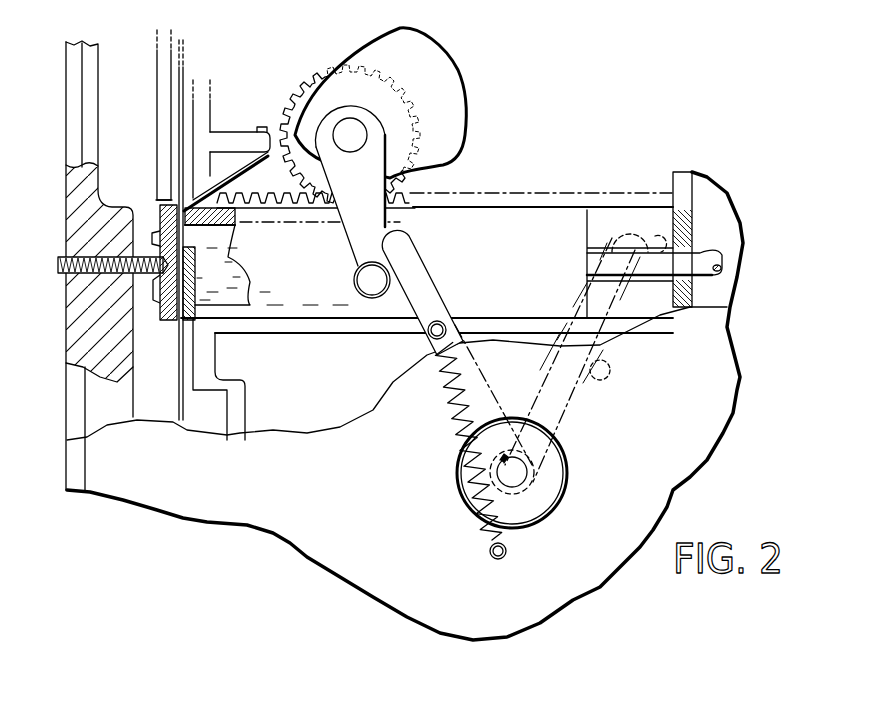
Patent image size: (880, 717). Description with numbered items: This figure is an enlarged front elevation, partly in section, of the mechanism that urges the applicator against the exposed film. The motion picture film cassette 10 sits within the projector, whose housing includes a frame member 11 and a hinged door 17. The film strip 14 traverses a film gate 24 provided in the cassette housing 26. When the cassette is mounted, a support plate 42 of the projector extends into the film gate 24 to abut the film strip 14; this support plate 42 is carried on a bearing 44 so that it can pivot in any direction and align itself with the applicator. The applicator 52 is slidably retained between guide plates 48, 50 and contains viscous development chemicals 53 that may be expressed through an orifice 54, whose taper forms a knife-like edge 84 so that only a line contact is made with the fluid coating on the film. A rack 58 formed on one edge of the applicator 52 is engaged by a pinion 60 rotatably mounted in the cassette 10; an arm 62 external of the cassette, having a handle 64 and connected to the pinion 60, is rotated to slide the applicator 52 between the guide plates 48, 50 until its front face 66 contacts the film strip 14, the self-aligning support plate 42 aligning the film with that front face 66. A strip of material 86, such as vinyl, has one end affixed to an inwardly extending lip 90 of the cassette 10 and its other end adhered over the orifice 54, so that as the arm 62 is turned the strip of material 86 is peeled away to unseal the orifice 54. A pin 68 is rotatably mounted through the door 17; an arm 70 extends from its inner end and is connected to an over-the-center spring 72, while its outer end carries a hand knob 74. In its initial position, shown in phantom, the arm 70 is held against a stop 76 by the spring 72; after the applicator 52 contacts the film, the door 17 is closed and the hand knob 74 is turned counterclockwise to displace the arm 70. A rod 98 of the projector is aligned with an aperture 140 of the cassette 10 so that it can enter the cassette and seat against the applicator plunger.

The motion picture film cassette 10 is at (462, 78).
The frame member 11 is at (70, 87).
The film strip 14 is at (183, 97).
The door 17 is at (343, 501).
The film gate 24 is at (160, 202).
The housing 26 is at (163, 93).
The support plate 42 is at (175, 317).
The bearing 44 is at (160, 287).
The guide plate 48 is at (518, 195).
The guide plate 50 is at (328, 323).
The applicator 52 is at (509, 265).
The viscous development chemicals 53 is at (233, 295).
The orifice 54 is at (203, 240).
The rack 58 is at (280, 203).
The pinion 60 is at (290, 97).
The arm 62 is at (392, 163).
The handle 64 is at (360, 287).
The front face 66 is at (180, 247).
The pin 68 is at (520, 478).
The arm 70 is at (473, 372).
The over-the-center spring 72 is at (450, 417).
The hand knob 74 is at (557, 458).
The stop 76 is at (612, 368).
The knife-like edge 84 is at (198, 237).
The strip of material 86 is at (246, 172).
The lip 90 is at (228, 137).
The rod 98 is at (640, 231).
The aperture 140 is at (720, 249).